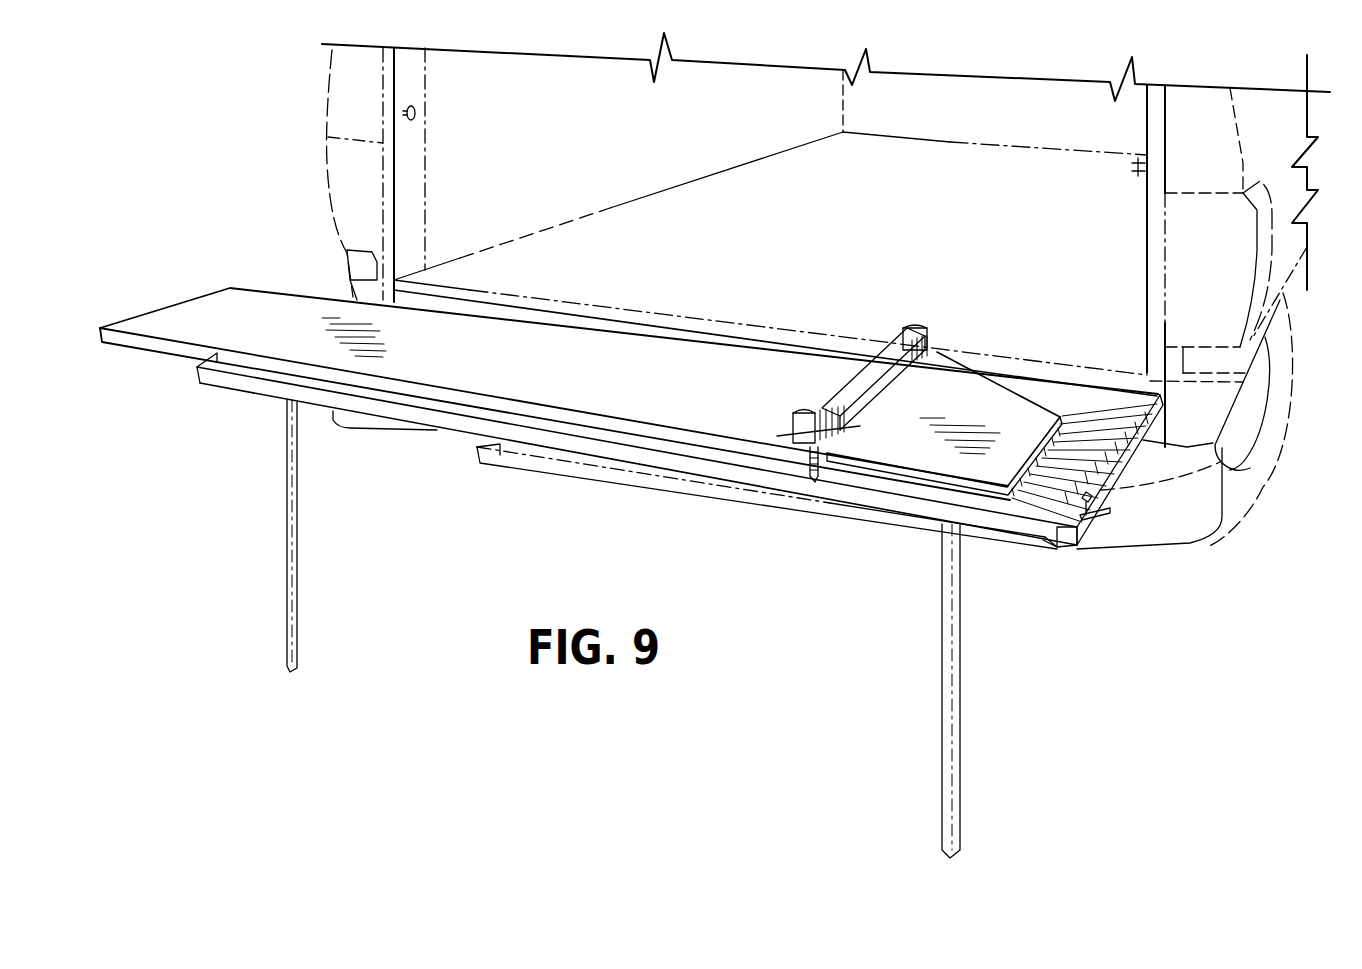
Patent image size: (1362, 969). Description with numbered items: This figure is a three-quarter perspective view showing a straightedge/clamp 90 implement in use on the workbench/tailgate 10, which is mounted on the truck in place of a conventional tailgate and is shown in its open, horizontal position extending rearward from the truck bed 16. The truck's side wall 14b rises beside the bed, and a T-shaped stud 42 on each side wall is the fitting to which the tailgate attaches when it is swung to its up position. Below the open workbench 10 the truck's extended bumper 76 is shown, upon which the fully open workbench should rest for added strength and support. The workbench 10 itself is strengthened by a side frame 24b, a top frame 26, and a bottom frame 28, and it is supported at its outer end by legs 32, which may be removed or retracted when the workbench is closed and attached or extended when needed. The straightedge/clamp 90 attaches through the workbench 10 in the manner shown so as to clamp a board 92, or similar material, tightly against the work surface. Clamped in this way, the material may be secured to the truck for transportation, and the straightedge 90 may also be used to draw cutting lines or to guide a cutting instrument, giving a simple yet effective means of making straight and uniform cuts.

The workbench/tailgate 10 is at (436, 440).
The side wall 14b is at (1245, 130).
The truck bed 16 is at (750, 160).
The side frame 24b is at (1060, 512).
The top frame 26 is at (900, 508).
The bottom frame 28 is at (1055, 385).
The leg 32 is at (297, 565).
The T-shaped stud 42 is at (418, 113).
The extended bumper 76 is at (1130, 540).
The straightedge/clamp 90 is at (870, 364).
The board 92 is at (800, 372).